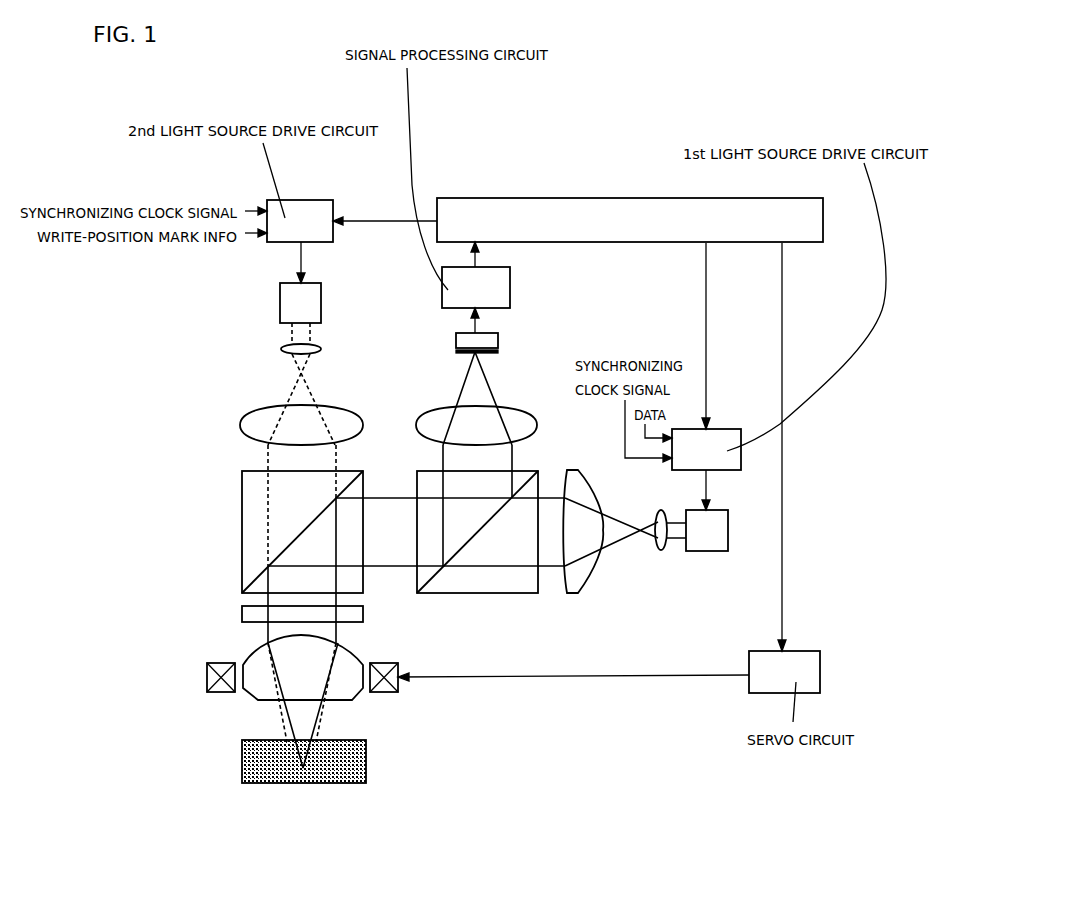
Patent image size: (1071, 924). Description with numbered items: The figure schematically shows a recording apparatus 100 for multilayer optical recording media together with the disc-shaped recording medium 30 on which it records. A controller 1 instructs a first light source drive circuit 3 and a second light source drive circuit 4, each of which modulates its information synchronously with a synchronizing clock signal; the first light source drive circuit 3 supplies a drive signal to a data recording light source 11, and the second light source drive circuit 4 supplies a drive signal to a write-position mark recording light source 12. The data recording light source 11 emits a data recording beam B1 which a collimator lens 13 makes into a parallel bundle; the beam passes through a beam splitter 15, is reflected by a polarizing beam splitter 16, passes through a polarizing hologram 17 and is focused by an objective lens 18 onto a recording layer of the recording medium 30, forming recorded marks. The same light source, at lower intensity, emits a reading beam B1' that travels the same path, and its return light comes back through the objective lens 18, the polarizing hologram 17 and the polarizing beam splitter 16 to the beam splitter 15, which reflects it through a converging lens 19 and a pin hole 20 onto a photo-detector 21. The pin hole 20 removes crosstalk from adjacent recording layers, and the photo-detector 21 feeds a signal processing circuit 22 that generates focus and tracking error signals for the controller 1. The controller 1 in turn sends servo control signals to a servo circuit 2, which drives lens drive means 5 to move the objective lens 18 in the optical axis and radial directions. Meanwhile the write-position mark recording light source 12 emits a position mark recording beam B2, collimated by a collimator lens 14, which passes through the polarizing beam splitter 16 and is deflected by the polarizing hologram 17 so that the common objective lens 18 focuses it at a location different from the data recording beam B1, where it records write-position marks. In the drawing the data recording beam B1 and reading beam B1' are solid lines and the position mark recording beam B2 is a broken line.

The recording apparatus 100 is at (500, 140).
The controller 1 is at (627, 197).
The servo circuit 2 is at (749, 652).
The first light source drive circuit 3 is at (729, 429).
The second light source drive circuit 4 is at (301, 200).
The lens drive means 5 is at (385, 692).
The data recording light source 11 is at (722, 509).
The write-position mark recording light source 12 is at (321, 301).
The collimator lens 13 is at (581, 470).
The collimator lens 14 is at (350, 406).
The beam splitter 15 is at (478, 594).
The polarizing beam splitter 16 is at (242, 531).
The polarizing hologram 17 is at (242, 612).
The objective lens 18 is at (354, 650).
The converging lens 19 is at (535, 409).
The pin hole 20 is at (462, 353).
The photo-detector 21 is at (498, 342).
The signal processing circuit 22 is at (510, 290).
The recording medium 30 is at (366, 758).
The data recording beam B1 is at (477, 606).
The reading beam B1' is at (492, 398).
The position mark recording beam B2 is at (291, 387).